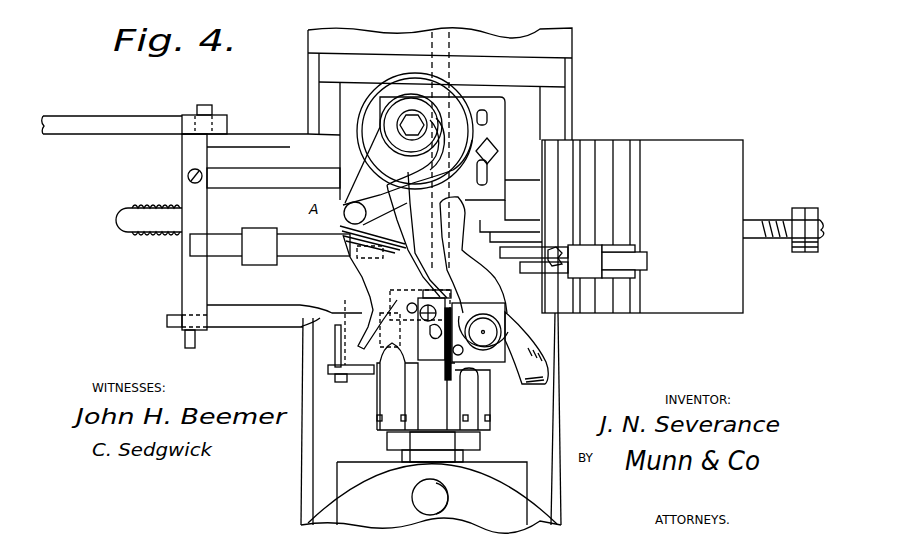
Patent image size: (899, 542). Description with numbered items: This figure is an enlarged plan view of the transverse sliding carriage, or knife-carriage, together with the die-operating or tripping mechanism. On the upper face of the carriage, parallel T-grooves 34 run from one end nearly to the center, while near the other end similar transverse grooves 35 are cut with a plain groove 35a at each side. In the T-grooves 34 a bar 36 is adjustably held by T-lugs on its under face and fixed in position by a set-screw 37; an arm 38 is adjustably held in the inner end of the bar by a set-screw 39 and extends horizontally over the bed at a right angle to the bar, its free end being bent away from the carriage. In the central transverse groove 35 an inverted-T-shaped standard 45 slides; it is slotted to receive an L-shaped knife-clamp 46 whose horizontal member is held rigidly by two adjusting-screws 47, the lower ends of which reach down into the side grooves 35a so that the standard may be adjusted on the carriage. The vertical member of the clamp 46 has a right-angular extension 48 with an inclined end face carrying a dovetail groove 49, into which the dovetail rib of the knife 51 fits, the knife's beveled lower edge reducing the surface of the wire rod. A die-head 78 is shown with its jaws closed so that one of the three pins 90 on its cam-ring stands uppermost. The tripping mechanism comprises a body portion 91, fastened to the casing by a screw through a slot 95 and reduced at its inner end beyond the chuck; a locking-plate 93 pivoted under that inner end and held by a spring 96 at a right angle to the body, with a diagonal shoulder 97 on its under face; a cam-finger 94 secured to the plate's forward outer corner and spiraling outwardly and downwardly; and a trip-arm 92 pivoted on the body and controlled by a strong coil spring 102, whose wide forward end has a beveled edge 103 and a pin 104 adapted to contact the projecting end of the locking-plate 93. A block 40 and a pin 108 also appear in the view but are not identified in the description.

The T-grooves 34 is at (273, 178).
The transverse grooves 35 is at (549, 208).
The plain groove 35a is at (625, 208).
The bar 36 is at (161, 232).
The set-screw 37 is at (187, 175).
The arm 38 is at (290, 341).
The set-screw 39 is at (185, 338).
The block 40 is at (259, 246).
The inverted-T-shaped standard 45 is at (585, 261).
The L-shaped clamp 46 is at (640, 260).
The adjusting-screws 47 is at (270, 245).
The right-angular extension 48 is at (548, 243).
The dovetail groove 49 is at (562, 248).
The knife 51 is at (557, 275).
The die-head 78 is at (433, 402).
The pins 90 is at (430, 332).
The body portion 91 is at (474, 243).
The trip-arm 92 is at (396, 259).
The locking-plate 93 is at (431, 329).
The cam-finger 94 is at (520, 353).
The slot 95 is at (487, 125).
The spring 96 is at (503, 308).
The diagonal shoulder 97 is at (462, 300).
The coil spring 102 is at (374, 101).
The beveled edge 103 is at (389, 330).
The pin or stud 104 is at (420, 305).
The pin 108 is at (446, 372).